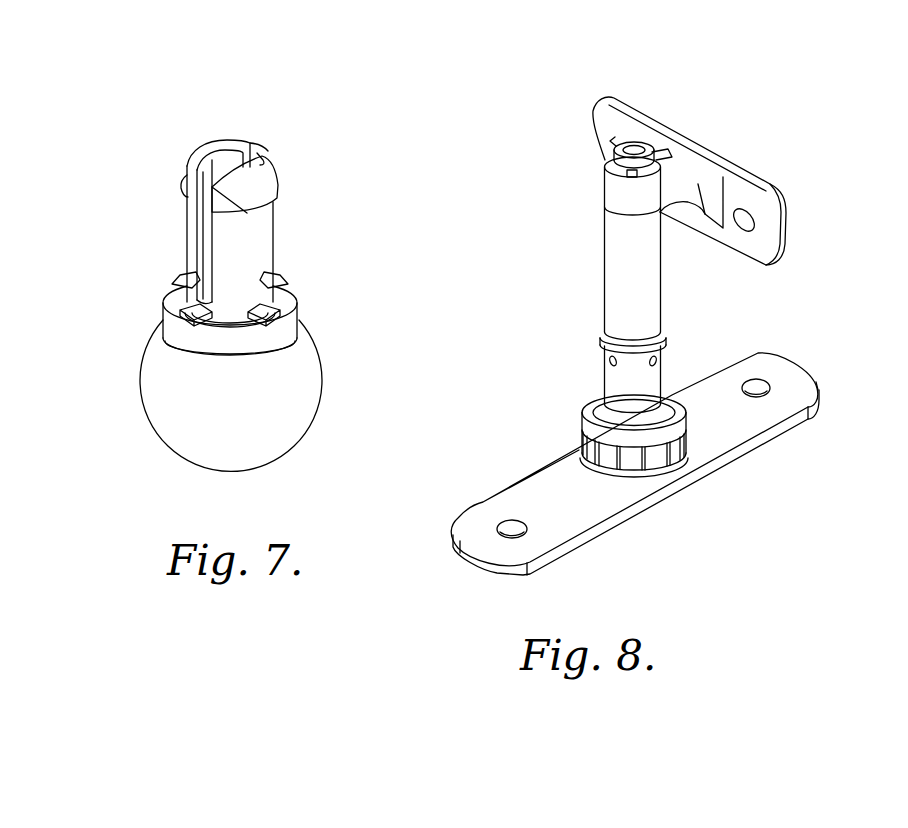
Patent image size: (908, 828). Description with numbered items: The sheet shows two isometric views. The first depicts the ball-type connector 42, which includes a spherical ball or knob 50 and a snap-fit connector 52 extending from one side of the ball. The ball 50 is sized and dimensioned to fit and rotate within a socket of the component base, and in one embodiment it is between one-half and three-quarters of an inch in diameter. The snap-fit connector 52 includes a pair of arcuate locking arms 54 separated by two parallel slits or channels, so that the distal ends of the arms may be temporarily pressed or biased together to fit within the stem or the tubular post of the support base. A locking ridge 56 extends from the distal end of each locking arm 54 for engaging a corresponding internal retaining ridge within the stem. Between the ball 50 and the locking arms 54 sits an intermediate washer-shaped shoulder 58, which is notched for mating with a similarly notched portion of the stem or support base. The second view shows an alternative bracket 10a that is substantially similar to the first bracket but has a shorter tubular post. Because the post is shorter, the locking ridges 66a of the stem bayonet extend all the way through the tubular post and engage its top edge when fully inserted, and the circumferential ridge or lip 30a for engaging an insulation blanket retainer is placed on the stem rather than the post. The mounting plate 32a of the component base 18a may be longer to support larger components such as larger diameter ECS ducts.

In FIG. 7, the snap-fit connector 52 is at (283, 132).
In FIG. 7, the arcuate locking arms 54 is at (188, 227).
In FIG. 7, the locking ridge 56 is at (188, 177).
In FIG. 7, the washer-shaped shoulder 58 is at (170, 322).
In FIG. 7, the spherical ball 50 is at (175, 407).
In FIG. 7, the ball-type connector 42 is at (350, 312).
In FIG. 8, the bracket 10a is at (775, 160).
In FIG. 8, the locking ridges 66a is at (657, 157).
In FIG. 8, the circumferential ridge or lip 30a is at (665, 333).
In FIG. 8, the component base 18a is at (745, 460).
In FIG. 8, the mounting plate 32a is at (587, 508).